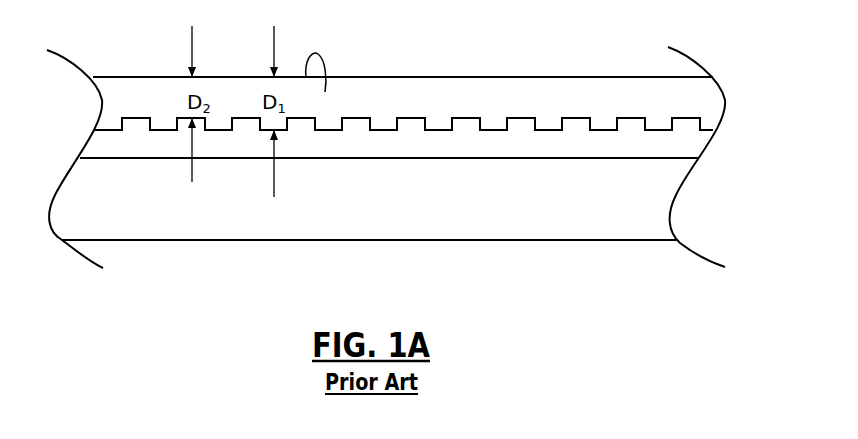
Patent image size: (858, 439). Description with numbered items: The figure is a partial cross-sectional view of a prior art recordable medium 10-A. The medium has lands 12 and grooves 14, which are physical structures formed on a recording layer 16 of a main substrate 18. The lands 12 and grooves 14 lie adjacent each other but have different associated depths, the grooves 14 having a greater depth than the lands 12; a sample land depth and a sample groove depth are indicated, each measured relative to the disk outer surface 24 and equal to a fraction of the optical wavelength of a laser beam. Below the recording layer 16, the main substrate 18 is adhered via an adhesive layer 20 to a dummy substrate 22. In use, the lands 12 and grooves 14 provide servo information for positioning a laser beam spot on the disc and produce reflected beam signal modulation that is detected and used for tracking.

The recordable medium 10-A is at (417, 77).
The lands 12 is at (411, 108).
The grooves 14 is at (438, 119).
The recording layer 16 is at (698, 122).
The main substrate 18 is at (638, 101).
The adhesive layer 20 is at (707, 145).
The dummy substrate 22 is at (467, 210).
The disk outer surface 24 is at (320, 85).